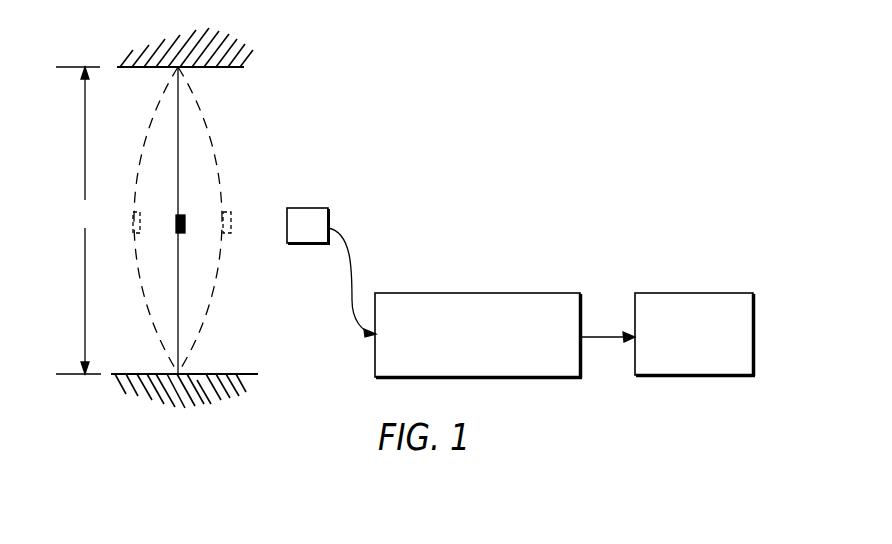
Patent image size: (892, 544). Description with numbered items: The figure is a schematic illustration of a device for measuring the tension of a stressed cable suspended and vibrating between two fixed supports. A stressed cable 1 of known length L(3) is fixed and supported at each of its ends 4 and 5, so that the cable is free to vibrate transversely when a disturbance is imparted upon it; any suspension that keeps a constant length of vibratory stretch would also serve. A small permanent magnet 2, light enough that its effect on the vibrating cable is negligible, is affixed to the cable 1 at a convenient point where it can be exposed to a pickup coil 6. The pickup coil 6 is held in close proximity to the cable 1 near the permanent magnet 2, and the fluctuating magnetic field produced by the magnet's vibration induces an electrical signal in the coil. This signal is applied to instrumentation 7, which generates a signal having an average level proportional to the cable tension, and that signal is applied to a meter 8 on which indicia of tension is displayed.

The stressed cable 1 is at (155, 325).
The permanent magnet 2 is at (186, 214).
The known length L 3 is at (78, 220).
The cable end 4 is at (178, 68).
The cable end 5 is at (181, 372).
The pickup coil 6 is at (307, 215).
The instrumentation 7 is at (493, 293).
The meter 8 is at (673, 293).